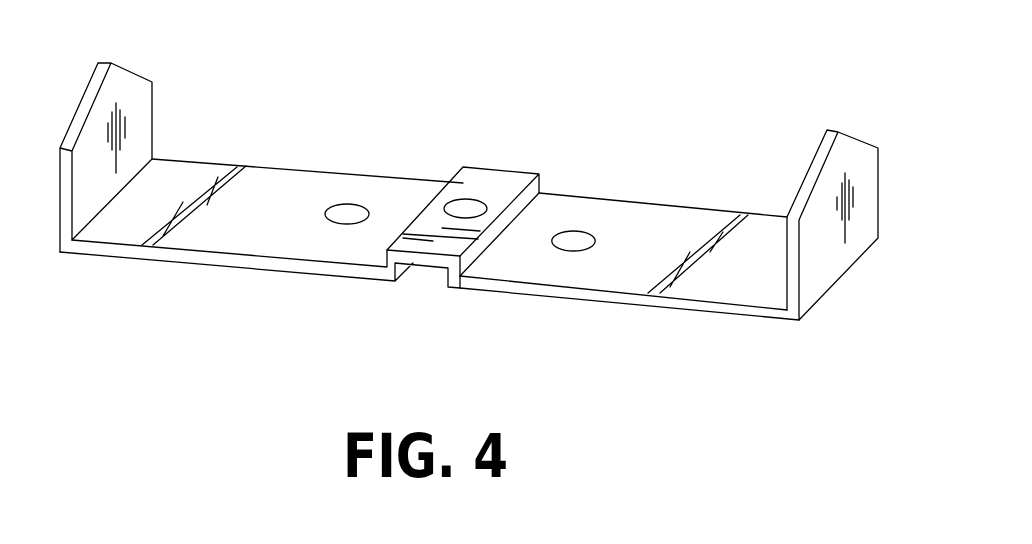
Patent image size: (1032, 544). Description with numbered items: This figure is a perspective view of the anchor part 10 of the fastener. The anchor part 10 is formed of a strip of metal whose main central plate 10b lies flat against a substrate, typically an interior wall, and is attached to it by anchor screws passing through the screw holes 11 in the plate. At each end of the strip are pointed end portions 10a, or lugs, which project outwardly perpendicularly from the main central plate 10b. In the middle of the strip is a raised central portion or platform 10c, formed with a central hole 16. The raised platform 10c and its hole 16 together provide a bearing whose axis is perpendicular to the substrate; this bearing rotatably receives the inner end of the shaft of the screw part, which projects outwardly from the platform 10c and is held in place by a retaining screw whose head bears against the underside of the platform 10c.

The anchor part 10 is at (738, 98).
The pointed end portions 10a is at (855, 163).
The main central plate 10b is at (718, 275).
The raised central portion 10c is at (500, 175).
The screw holes 11 is at (347, 217).
The central hole 16 is at (472, 213).